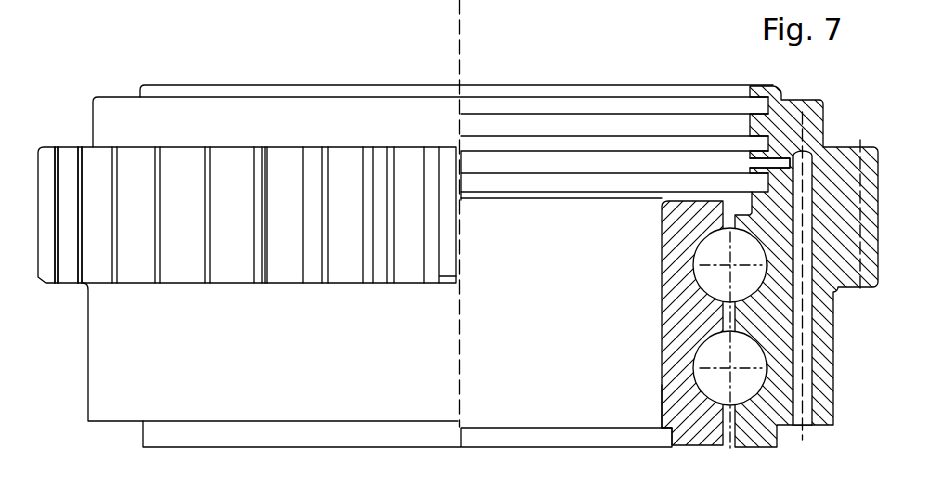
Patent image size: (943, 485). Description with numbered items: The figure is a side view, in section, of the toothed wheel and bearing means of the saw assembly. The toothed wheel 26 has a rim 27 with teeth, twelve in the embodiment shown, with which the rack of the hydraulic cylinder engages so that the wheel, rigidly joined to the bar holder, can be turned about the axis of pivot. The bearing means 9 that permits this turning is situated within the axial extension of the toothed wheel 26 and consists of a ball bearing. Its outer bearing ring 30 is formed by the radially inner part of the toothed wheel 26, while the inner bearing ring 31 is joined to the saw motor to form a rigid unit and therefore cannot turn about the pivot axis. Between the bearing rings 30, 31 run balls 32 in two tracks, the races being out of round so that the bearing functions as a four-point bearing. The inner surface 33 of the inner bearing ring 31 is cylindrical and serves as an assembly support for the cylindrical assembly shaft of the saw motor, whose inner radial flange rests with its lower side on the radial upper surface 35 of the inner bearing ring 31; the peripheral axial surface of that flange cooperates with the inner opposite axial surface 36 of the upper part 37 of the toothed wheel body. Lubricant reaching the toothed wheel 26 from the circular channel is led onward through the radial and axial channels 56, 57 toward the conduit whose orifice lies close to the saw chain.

The bearing means 9 is at (678, 325).
The toothed wheel 26 is at (632, 86).
The rim 27 is at (68, 147).
The outer bearing ring 30 is at (783, 348).
The inner bearing ring 31 is at (672, 312).
The balls 32 is at (713, 352).
The inner surface 33 is at (664, 385).
The radial upper surface 35 is at (697, 193).
The inner opposite axial surface 36 is at (745, 89).
The upper part 37 is at (818, 122).
The radial channel 56 is at (776, 163).
The axial channel 57 is at (806, 382).